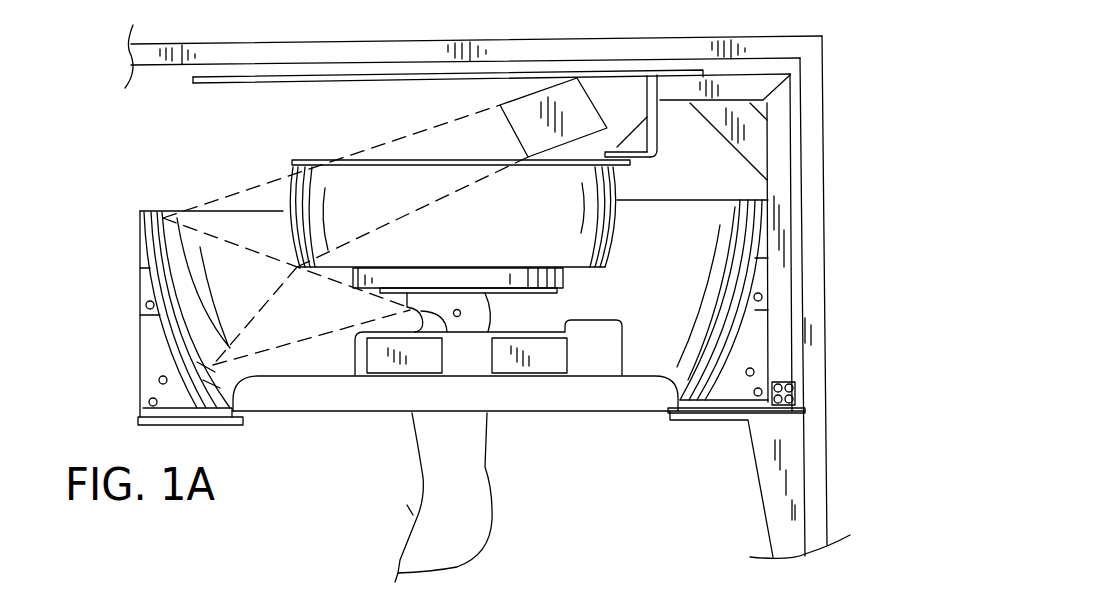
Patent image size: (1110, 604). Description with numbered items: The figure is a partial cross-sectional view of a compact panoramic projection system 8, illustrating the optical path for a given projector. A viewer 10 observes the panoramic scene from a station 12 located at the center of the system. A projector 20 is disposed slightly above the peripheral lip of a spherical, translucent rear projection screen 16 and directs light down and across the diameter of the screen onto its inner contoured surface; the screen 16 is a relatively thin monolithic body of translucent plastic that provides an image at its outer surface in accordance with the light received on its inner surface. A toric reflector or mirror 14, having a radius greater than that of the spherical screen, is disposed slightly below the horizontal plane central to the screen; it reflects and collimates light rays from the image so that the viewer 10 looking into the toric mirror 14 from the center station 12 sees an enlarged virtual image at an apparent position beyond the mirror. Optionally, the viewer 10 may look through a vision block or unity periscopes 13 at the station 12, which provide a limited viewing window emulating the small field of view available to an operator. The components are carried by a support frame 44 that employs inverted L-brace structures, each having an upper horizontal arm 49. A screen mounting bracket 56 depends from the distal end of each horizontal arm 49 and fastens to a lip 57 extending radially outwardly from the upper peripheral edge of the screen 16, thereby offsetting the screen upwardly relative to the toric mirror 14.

The compact panoramic projection system 8 is at (107, 233).
The viewer 10 is at (473, 443).
The station 12 is at (540, 313).
The vision block or unity periscopes 13 is at (533, 367).
The toric reflector or mirror 14 is at (155, 287).
The spherical rear projection screen 16 is at (287, 188).
The projector 20 is at (540, 95).
The support frame 44 is at (760, 76).
The horizontal arm 49 is at (720, 76).
The screen mounting bracket 56 is at (658, 135).
The lip 57 is at (627, 165).